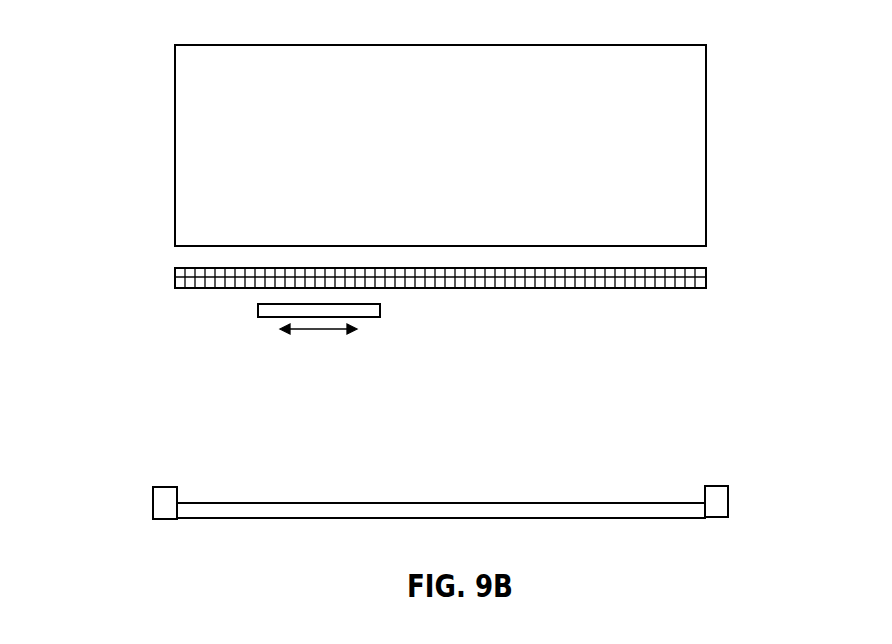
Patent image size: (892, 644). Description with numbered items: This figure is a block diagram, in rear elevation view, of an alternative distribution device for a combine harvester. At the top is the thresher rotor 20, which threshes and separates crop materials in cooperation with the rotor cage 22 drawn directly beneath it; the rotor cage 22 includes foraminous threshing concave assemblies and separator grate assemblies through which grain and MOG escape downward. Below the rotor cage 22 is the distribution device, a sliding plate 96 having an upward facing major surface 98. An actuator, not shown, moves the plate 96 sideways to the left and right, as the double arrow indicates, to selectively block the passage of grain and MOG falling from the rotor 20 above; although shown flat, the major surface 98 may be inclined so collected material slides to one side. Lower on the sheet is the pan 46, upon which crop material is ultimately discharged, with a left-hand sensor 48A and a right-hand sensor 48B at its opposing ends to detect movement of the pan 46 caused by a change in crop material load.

The thresher rotor 20 is at (183, 134).
The rotor cage 22 is at (175, 280).
The sliding plate 96 is at (257, 306).
The upward facing major surface 98 is at (360, 289).
The pan 46 is at (287, 515).
The left-hand sensor 48A is at (167, 503).
The right-hand sensor 48B is at (728, 512).